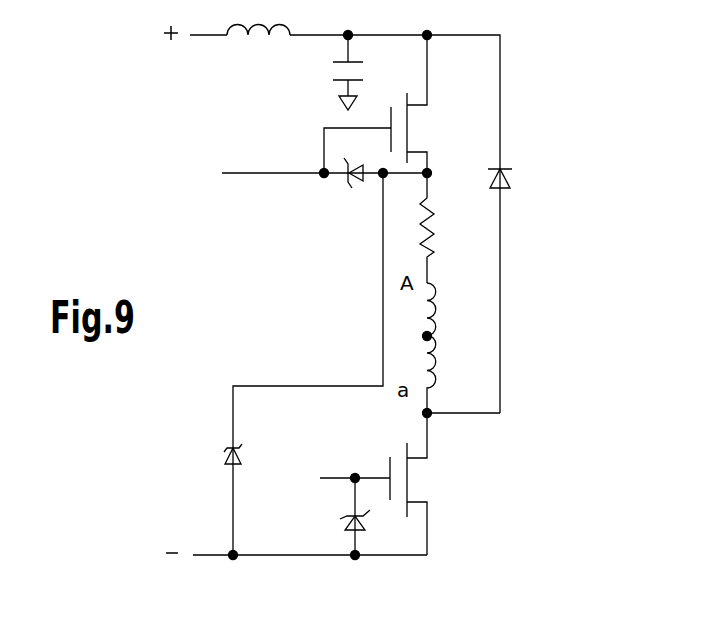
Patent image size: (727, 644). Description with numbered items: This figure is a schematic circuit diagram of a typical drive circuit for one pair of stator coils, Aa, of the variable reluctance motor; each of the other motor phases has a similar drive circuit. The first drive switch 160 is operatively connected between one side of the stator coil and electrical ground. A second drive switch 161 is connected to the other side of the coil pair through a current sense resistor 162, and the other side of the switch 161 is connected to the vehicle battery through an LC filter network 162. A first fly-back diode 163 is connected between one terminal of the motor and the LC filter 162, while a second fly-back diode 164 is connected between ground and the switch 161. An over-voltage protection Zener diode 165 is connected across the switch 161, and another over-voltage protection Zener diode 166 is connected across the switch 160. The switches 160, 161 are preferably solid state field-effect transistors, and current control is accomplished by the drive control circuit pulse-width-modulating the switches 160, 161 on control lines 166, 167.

The first drive switch 160 is at (425, 474).
The second drive switch 161 is at (418, 127).
The current sense resistor 162 is at (273, 74).
The first fly-back diode 163 is at (508, 181).
The second fly-back diode 164 is at (227, 459).
The over-voltage protection Zener diode 165 is at (362, 184).
The over-voltage protection Zener diode 166 is at (257, 173).
The control line 167 is at (330, 478).